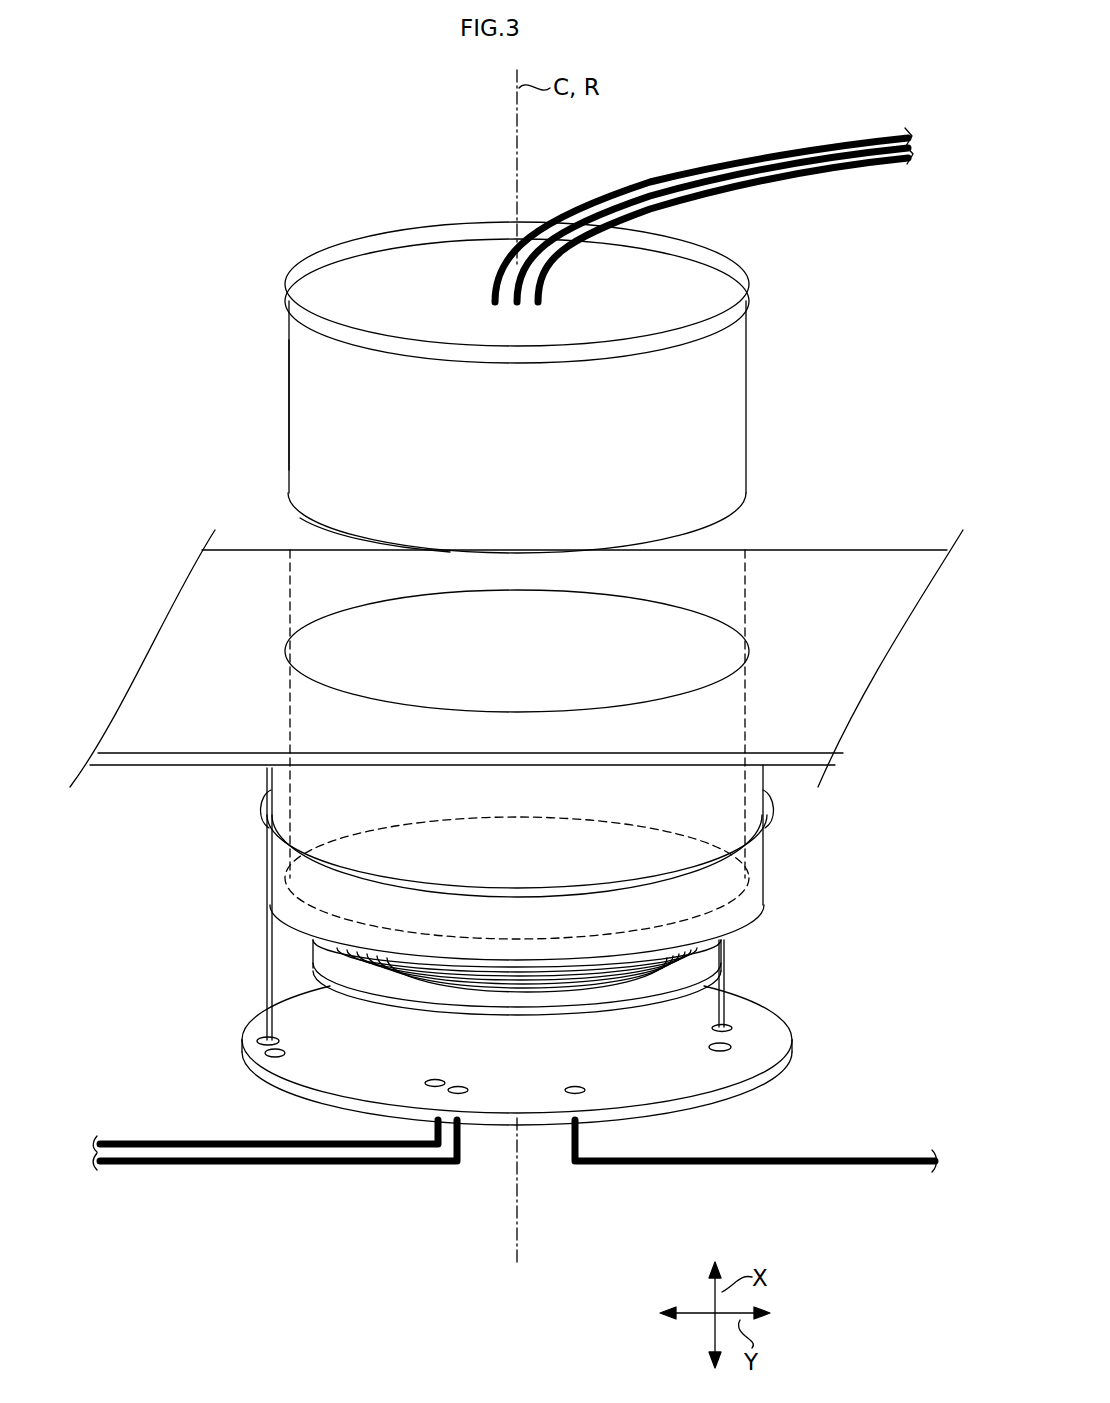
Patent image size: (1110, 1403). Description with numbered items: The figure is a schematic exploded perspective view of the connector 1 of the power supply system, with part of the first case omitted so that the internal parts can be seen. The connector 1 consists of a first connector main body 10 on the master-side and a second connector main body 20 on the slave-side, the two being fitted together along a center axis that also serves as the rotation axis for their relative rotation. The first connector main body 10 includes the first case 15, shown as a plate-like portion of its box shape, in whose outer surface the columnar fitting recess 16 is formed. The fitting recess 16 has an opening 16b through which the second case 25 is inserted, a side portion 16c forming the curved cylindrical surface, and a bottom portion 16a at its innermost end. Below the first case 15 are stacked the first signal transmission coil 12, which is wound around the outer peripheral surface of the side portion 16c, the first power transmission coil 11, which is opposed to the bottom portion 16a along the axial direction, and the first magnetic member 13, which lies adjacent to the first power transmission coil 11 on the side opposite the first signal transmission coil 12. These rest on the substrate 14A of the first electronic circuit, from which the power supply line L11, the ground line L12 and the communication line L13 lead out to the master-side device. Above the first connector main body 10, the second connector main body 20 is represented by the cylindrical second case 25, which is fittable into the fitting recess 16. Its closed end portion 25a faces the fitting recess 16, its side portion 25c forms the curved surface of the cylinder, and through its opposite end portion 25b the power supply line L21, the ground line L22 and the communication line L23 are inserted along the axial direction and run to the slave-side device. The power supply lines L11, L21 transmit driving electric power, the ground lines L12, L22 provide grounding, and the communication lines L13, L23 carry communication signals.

The connector 1 is at (96, 840).
The first connector main body 10 is at (184, 928).
The first power transmission coil 11 is at (678, 965).
The first signal transmission coil 12 is at (773, 820).
The first magnetic member 13 is at (657, 990).
The substrate 14A is at (707, 1068).
The first case 15 is at (835, 712).
The fitting recess 16 is at (368, 635).
The bottom portion 16a is at (293, 930).
The opening 16b is at (670, 617).
The side portion 16c is at (300, 782).
The second connector main body 20 is at (517, 502).
The second case 25 is at (725, 372).
The end portion 25a is at (320, 533).
The end portion 25b is at (353, 300).
The side portion 25c is at (312, 410).
The power supply line L11 is at (186, 1140).
The ground line L12 is at (190, 1165).
The communication line L13 is at (838, 1165).
The power supply line L21 is at (707, 165).
The ground line L22 is at (667, 168).
The communication line L23 is at (803, 170).